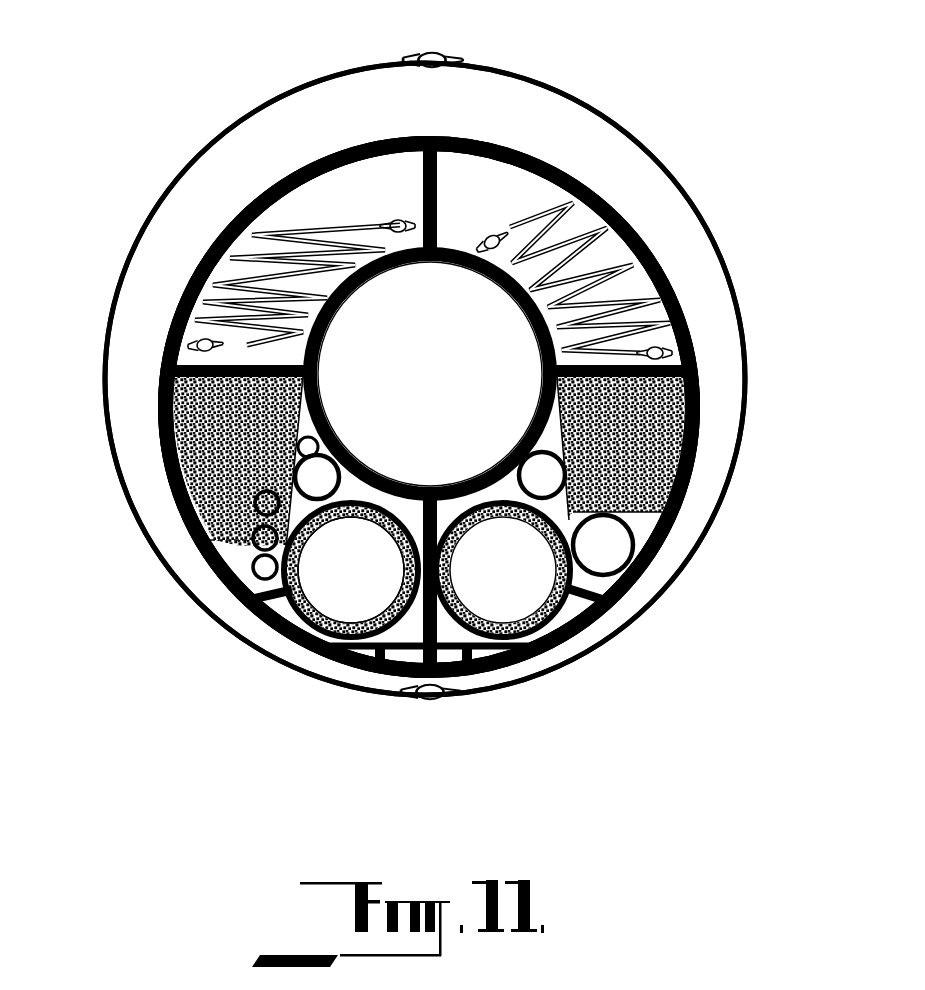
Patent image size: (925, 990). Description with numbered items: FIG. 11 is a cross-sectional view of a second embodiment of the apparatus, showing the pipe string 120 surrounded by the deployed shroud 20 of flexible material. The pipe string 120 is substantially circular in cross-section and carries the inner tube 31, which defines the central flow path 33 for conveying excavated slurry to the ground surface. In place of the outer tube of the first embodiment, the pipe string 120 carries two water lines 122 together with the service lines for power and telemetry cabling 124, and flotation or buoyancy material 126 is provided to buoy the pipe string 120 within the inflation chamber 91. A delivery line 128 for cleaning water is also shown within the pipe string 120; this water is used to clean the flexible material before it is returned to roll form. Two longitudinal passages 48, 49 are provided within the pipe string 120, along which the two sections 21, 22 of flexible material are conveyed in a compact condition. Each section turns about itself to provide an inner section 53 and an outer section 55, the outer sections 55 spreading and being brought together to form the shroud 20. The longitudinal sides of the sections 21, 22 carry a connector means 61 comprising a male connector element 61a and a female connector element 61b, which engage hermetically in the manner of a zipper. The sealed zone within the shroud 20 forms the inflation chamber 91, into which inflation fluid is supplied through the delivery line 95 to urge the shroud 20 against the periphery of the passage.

The shroud 20 is at (103, 368).
The section of flexible material 21 is at (223, 276).
The section of flexible material 22 is at (632, 224).
The inner tube 31 is at (502, 281).
The central flow path 33 is at (430, 374).
The longitudinal passage 48 is at (312, 207).
The longitudinal passage 49 is at (541, 193).
The inner section 53 is at (250, 250).
The outer section 55 is at (126, 259).
The connector means 61 is at (445, 60).
The male connector element 61a is at (490, 240).
The female connector element 61b is at (190, 343).
The inflation chamber 91 is at (202, 470).
The delivery line 95 is at (255, 505).
The pipe string 120 is at (668, 273).
The water lines 122 is at (382, 622).
The service lines 124 is at (235, 602).
The flotation or buoyancy material 126 is at (165, 490).
The delivery line for cleaning water 128 is at (340, 520).